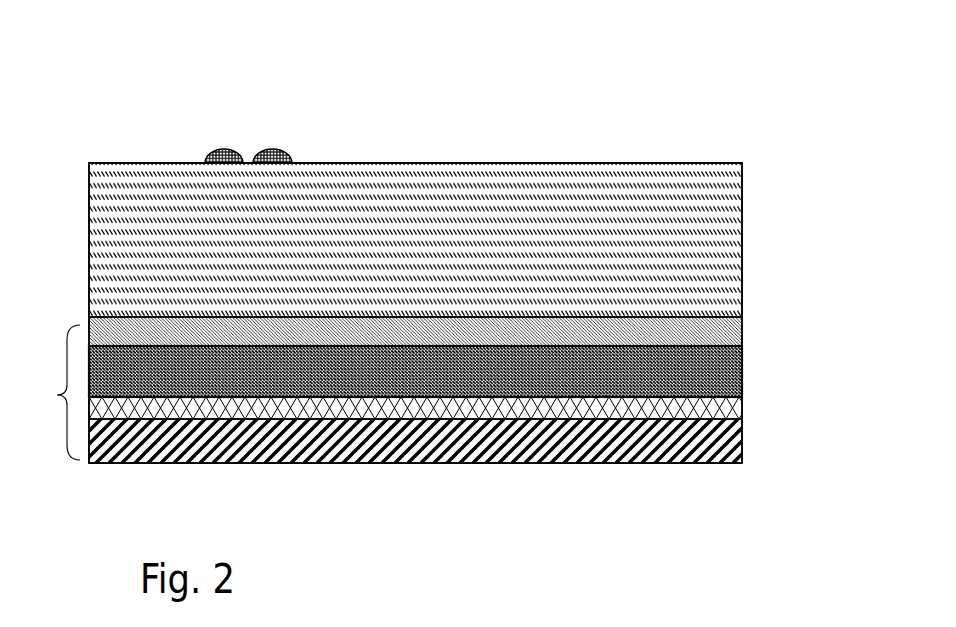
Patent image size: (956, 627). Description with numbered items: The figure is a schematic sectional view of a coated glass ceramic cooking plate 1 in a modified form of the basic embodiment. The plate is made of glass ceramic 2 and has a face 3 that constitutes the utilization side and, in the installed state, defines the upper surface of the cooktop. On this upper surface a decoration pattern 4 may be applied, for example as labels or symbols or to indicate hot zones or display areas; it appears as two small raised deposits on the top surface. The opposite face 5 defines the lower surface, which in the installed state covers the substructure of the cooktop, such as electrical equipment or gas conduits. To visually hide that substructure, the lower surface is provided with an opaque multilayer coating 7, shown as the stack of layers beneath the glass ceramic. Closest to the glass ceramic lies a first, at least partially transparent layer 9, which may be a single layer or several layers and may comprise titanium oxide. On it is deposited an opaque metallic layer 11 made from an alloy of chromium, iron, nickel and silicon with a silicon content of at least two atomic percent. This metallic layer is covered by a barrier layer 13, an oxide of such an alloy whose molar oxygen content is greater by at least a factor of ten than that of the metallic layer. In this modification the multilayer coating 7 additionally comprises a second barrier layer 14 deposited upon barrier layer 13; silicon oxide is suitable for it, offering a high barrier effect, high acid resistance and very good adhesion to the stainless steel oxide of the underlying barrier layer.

The coated glass ceramic cooking plate 1 is at (165, 135).
The glass ceramic 2 is at (638, 192).
The face constituting the utilization side 3 is at (352, 162).
The decoration pattern 4 is at (224, 148).
The opposite face / lower surface 5 is at (106, 330).
The opaque multilayer coating 7 is at (58, 392).
The first at least partially transparent layer 9 is at (742, 328).
The opaque metallic layer 11 is at (742, 375).
The barrier layer 13 is at (742, 412).
The second barrier layer 14 is at (742, 444).